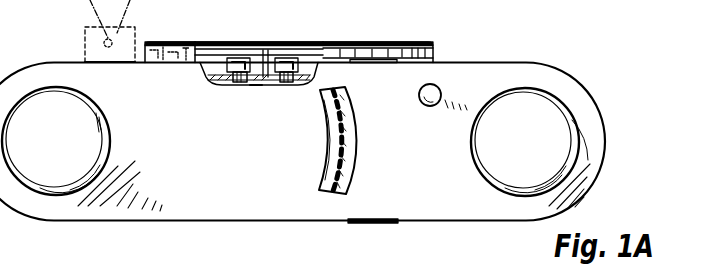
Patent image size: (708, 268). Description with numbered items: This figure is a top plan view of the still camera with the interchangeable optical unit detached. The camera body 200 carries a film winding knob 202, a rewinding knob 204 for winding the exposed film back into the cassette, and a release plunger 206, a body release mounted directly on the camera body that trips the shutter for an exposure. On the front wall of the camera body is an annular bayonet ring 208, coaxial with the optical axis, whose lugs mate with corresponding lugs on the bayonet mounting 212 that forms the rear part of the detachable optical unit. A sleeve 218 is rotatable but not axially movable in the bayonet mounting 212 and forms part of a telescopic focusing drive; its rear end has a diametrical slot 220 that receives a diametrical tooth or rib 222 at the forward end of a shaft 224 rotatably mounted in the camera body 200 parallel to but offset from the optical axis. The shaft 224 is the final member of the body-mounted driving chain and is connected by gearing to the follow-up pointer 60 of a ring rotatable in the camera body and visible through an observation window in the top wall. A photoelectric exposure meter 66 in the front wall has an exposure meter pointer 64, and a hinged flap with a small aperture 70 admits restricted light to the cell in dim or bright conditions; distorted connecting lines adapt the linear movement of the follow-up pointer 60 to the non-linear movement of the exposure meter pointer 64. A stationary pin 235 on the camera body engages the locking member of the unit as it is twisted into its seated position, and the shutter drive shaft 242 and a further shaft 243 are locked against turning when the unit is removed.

The camera body 200 is at (472, 77).
The film winding knob 202 is at (529, 178).
The rewinding knob 204 is at (58, 177).
The release plunger 206 is at (432, 106).
The annular bayonet ring 208 is at (163, 62).
The bayonet mounting 212 is at (199, 3).
The sleeve 218 is at (360, 0).
The diametrical slot 220 is at (335, 0).
The diametrical tooth or rib 222 is at (280, 55).
The shaft 224 is at (288, 84).
The pin 235 is at (257, 86).
The drive shaft of the shutter 242 is at (292, 5).
The shaft 243 is at (236, 84).
The follow-up mark or pointer 60 is at (356, 148).
The exposure meter pointer 64 is at (325, 150).
The photoelectric exposure meter 66 is at (103, 60).
The small aperture 70 is at (96, 23).